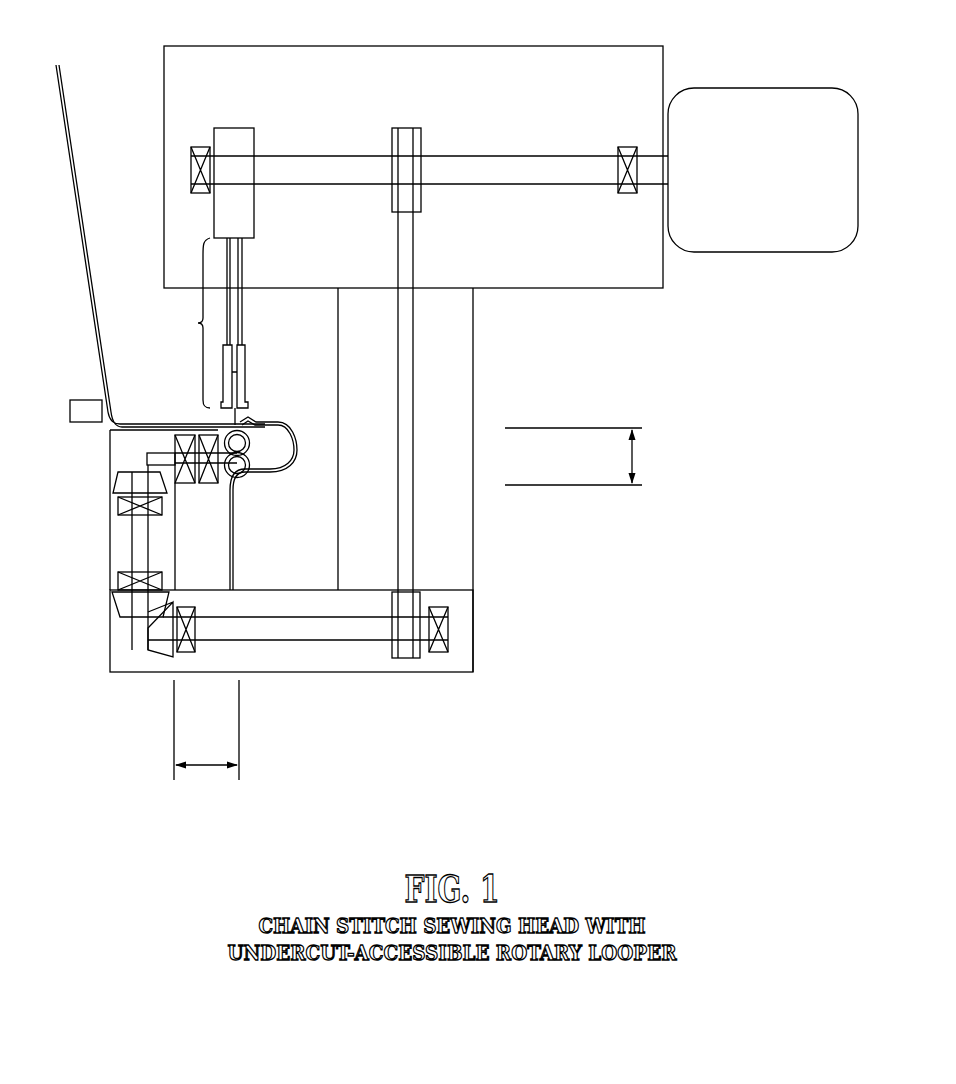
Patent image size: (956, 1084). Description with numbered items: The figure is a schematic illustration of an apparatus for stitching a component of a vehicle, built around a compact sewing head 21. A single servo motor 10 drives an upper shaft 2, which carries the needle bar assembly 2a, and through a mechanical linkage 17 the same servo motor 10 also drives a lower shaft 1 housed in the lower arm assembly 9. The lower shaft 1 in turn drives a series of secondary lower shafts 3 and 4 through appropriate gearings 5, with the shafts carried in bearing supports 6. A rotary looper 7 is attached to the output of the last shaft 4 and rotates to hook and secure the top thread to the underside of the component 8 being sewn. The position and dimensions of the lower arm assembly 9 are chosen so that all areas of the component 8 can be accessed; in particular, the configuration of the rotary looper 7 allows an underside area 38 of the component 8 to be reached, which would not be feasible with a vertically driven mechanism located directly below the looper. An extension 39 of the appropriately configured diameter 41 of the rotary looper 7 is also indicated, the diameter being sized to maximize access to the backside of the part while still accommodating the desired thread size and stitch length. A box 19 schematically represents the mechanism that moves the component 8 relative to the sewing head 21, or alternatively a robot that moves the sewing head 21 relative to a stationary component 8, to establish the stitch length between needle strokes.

The lower shaft 1 is at (327, 632).
The upper shaft 2 is at (503, 152).
The needle bar assembly 2a is at (205, 331).
The secondary lower shaft 3 is at (152, 542).
The last shaft 4 is at (165, 458).
The gearings 5 is at (145, 441).
The bearing supports 6 is at (112, 508).
The rotary looper 7 is at (256, 457).
The component 8 is at (93, 332).
The lower arm assembly 9 is at (478, 624).
The servo motor 10 is at (772, 244).
The mechanical linkage 17 is at (405, 533).
The mechanism for moving the part or sewing head 19 is at (87, 398).
The sewing head 21 is at (102, 492).
The underside area 38 is at (286, 450).
The extension 39 is at (209, 770).
The diameter 41 is at (634, 454).